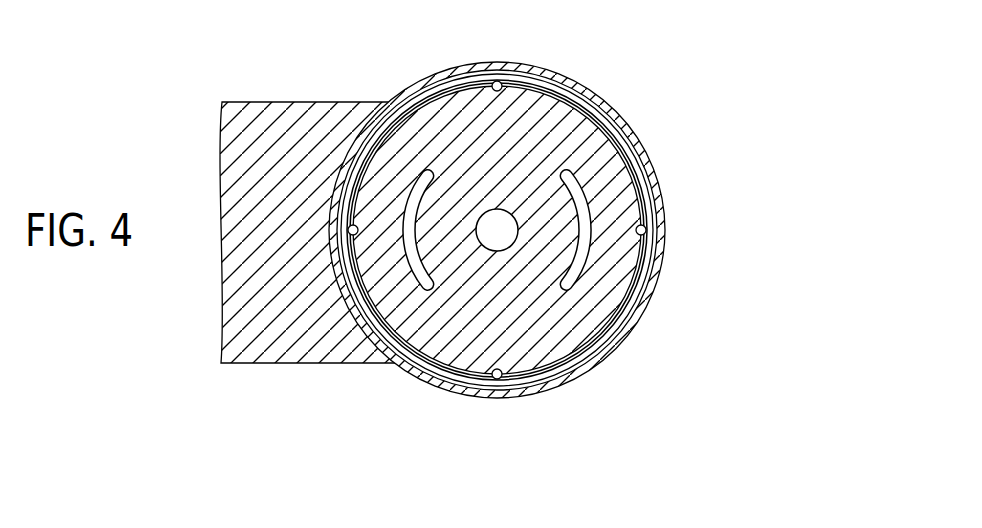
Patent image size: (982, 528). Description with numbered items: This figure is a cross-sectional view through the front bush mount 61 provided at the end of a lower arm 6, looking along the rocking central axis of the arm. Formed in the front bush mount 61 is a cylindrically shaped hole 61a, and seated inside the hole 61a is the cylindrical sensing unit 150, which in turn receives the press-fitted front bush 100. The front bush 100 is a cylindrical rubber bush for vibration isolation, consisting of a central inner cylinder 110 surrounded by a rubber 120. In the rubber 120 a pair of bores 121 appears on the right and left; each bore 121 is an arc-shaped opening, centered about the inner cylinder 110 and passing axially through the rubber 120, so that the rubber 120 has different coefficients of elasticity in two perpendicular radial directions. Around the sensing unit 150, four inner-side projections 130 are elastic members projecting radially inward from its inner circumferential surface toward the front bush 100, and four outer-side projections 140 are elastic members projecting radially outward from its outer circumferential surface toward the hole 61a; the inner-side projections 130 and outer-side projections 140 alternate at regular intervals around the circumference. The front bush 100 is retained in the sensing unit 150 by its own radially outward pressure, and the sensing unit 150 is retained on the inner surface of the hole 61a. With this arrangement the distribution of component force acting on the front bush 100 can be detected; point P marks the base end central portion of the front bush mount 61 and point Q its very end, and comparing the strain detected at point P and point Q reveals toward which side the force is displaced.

The lower arm 6 is at (303, 133).
The front bush mount 61 is at (576, 80).
The hole 61a is at (445, 387).
The front bush 100 is at (376, 92).
The inner cylinder 110 is at (490, 208).
The rubber 120 is at (610, 170).
The bores 121 is at (590, 233).
The inner-side projections 130 is at (498, 82).
The outer-side projections 140 is at (388, 105).
The sensing unit 150 is at (530, 378).
The point P is at (335, 190).
The point Q is at (665, 235).